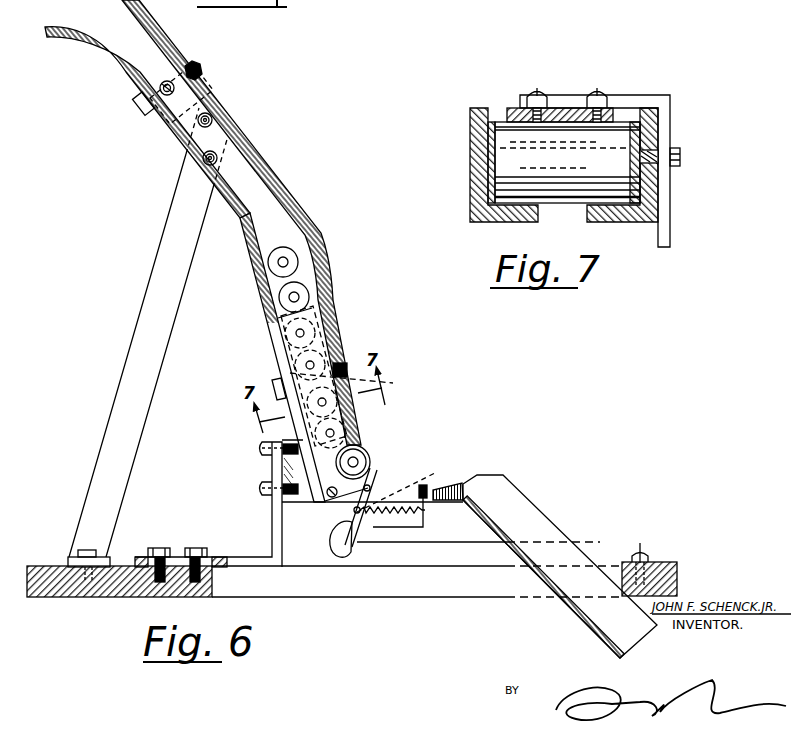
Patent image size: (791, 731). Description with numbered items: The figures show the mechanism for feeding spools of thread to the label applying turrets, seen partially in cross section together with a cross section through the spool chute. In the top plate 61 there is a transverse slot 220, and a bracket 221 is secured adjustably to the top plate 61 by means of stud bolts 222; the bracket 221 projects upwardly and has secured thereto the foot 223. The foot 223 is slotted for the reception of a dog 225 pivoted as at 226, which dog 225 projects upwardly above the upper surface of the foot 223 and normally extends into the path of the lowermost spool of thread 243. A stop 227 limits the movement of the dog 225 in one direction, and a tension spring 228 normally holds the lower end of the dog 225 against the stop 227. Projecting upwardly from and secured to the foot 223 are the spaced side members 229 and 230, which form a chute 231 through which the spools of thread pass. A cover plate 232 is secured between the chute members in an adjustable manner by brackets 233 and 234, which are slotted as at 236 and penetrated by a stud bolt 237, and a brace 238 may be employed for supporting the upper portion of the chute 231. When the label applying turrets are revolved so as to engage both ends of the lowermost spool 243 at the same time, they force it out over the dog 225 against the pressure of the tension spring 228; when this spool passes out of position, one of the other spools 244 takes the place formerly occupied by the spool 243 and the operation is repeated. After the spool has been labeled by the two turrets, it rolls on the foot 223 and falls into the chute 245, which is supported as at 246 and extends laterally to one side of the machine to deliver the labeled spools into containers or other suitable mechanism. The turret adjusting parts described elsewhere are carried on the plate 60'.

In FIG. 6, the base plate 220 is at (367, 587).
In FIG. 6, the upright bracket plate 221 is at (272, 470).
In FIG. 6, the clamp bolts 222 is at (193, 548).
In FIG. 6, the support block 223 is at (305, 490).
In FIG. 6, the lever 225 is at (373, 470).
In FIG. 6, the spring 226 is at (381, 488).
In FIG. 6, the rod 227 is at (420, 533).
In FIG. 6, the stop 228 is at (437, 488).
In FIG. 6, the channel side plate 229 is at (165, 132).
In FIG. 7, the channel side plate 229 is at (655, 178).
In FIG. 6, the channel side wall 230 is at (277, 347).
In FIG. 7, the channel side wall 230 is at (476, 168).
In FIG. 6, the rail channel 231 is at (262, 196).
In FIG. 6, the channel top plate 232 is at (143, 24).
In FIG. 7, the channel top plate 232 is at (560, 108).
In FIG. 6, the bracket 233 is at (342, 364).
In FIG. 7, the bracket 233 is at (650, 98).
In FIG. 6, the nut 234 is at (202, 70).
In FIG. 6, the bolt 236 is at (190, 92).
In FIG. 7, the bolt 237 is at (680, 155).
In FIG. 6, the strut 238 is at (152, 346).
In FIG. 6, the roller 243 is at (362, 449).
In FIG. 6, the roller 244 is at (347, 427).
In FIG. 7, the roller 244 is at (508, 150).
In FIG. 6, the chute 245 is at (547, 532).
In FIG. 6, the bolt 246 is at (642, 554).
In FIG. 6, the support 60' is at (616, 539).
In FIG. 6, the base 61 is at (677, 568).